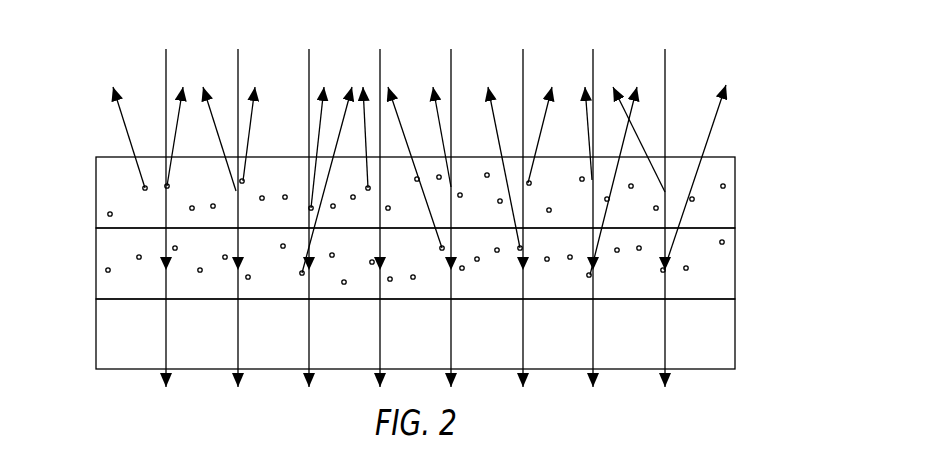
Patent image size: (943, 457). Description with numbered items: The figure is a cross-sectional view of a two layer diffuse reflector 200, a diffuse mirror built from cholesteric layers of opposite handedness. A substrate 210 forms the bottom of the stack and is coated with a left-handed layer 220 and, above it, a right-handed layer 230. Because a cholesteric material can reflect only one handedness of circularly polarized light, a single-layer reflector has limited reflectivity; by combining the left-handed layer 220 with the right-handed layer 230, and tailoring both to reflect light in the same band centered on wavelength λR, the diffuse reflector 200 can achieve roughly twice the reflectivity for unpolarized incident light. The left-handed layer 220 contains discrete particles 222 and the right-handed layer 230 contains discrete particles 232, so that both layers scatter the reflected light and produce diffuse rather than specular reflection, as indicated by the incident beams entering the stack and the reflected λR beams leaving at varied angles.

The two layer diffuse reflector 200 is at (93, 45).
The substrate 210 is at (735, 351).
The left-handed layer 220 is at (735, 280).
The right-handed layer 230 is at (735, 173).
The discrete particles 222 is at (106, 269).
The discrete particles 232 is at (108, 213).